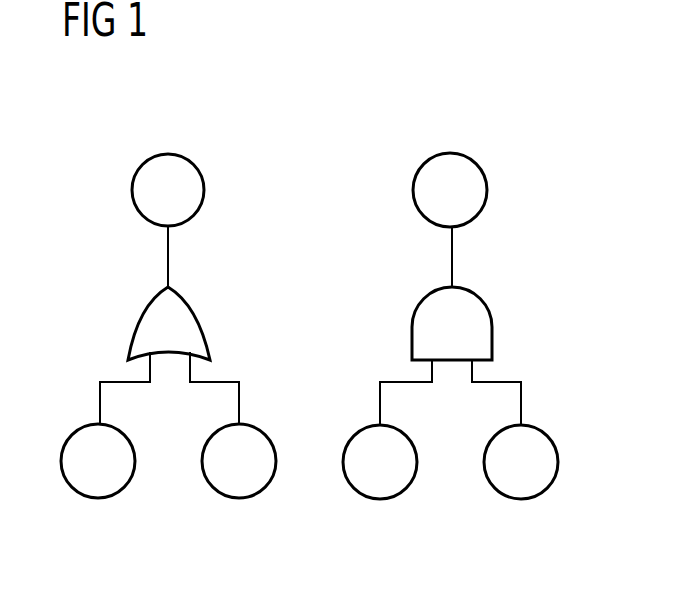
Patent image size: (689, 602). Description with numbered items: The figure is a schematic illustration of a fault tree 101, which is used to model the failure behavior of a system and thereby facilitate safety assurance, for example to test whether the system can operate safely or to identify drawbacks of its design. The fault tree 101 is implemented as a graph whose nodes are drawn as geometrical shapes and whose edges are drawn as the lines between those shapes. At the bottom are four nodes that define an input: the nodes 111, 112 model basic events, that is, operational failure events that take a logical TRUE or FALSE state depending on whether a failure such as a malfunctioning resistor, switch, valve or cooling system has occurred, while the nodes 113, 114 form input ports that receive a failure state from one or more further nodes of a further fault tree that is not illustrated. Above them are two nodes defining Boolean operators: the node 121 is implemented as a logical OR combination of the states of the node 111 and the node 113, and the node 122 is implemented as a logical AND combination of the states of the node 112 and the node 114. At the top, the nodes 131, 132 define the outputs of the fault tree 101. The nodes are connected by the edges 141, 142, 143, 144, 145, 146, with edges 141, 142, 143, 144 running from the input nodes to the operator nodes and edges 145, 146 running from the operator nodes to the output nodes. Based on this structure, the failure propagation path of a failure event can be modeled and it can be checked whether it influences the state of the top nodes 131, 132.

The fault tree 101 is at (518, 140).
The input node 111 is at (98, 500).
The input node 112 is at (380, 500).
The input port node 113 is at (239, 500).
The input port node 114 is at (521, 500).
The OR operator node 121 is at (140, 318).
The AND operator node 122 is at (492, 327).
The output node 131 is at (168, 152).
The output node 132 is at (450, 153).
The edge 141 is at (100, 403).
The edge 142 is at (238, 408).
The edge 143 is at (379, 393).
The edge 144 is at (522, 402).
The edge 145 is at (168, 262).
The edge 146 is at (452, 258).